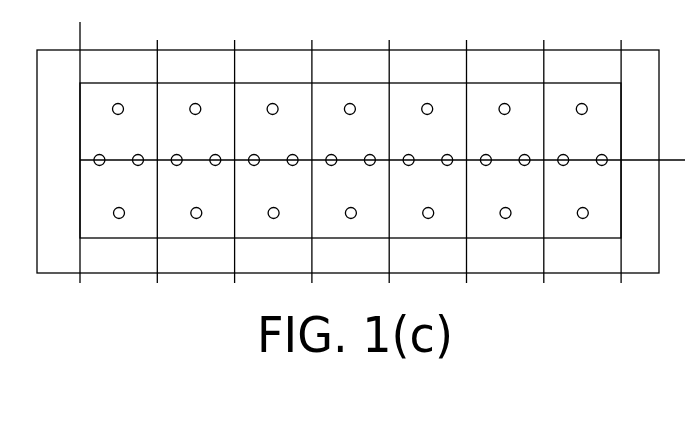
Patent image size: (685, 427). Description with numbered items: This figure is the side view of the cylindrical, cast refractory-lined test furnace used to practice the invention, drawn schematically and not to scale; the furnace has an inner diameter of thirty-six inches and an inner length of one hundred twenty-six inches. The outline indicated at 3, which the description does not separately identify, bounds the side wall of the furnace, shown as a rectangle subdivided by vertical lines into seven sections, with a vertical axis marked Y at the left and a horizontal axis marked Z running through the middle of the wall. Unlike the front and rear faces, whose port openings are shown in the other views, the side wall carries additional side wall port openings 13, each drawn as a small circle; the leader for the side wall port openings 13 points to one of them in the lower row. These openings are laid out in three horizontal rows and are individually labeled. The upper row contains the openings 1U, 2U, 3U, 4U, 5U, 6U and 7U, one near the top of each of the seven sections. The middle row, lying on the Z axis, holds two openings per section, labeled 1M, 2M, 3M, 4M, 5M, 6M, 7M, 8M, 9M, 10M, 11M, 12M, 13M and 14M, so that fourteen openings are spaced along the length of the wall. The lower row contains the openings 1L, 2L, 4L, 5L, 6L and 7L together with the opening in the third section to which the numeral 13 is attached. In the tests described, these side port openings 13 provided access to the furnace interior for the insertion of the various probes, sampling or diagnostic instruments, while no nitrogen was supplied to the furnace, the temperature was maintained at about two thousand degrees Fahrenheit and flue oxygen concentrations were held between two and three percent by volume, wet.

The substrate with measurement point array 3 is at (485, 50).
The side wall port opening 13 is at (274, 219).
The measurement point 1U is at (103, 107).
The measurement point 2U is at (180, 107).
The measurement point 3U is at (258, 107).
The measurement point 4U is at (335, 107).
The measurement point 5U is at (412, 107).
The measurement point 6U is at (490, 107).
The measurement point 7U is at (567, 107).
The measurement point 1L is at (104, 214).
The measurement point 2L is at (181, 214).
The measurement point 4L is at (336, 214).
The measurement point 5L is at (413, 214).
The measurement point 6L is at (491, 214).
The measurement point 7L is at (568, 214).
The measurement point 1M is at (99, 147).
The measurement point 2M is at (138, 147).
The measurement point 3M is at (177, 147).
The measurement point 4M is at (215, 147).
The measurement point 5M is at (254, 147).
The measurement point 6M is at (293, 147).
The measurement point 7M is at (331, 147).
The measurement point 8M is at (370, 147).
The measurement point 9M is at (409, 147).
The measurement point 10M is at (447, 147).
The measurement point 11M is at (486, 147).
The measurement point 12M is at (525, 147).
The measurement point 13M is at (563, 147).
The measurement point 14M is at (602, 147).